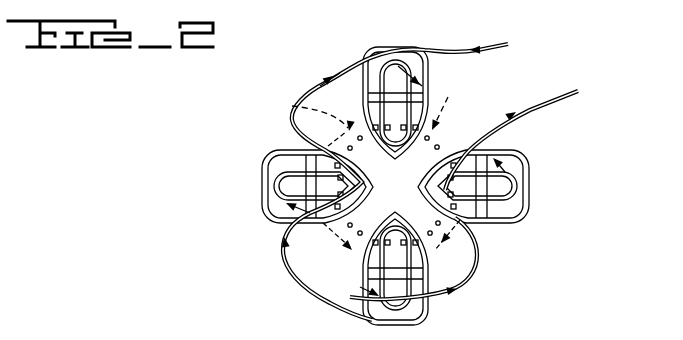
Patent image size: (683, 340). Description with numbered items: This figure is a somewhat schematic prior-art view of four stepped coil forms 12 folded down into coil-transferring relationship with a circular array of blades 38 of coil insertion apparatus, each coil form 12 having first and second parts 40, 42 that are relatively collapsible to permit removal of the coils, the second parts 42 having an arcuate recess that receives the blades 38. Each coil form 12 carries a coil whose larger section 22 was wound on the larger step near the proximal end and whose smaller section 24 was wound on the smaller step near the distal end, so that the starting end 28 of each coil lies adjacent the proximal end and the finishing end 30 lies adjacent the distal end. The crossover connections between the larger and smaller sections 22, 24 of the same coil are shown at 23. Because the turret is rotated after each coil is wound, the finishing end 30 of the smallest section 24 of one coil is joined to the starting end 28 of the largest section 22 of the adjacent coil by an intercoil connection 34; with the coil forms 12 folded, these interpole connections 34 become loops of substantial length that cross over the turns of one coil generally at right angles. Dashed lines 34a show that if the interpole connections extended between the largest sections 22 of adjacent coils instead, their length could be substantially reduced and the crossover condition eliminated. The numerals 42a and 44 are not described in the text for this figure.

The coil form 12 is at (498, 151).
The larger section 22 is at (430, 62).
The crossover connection 23 is at (500, 163).
The smaller section 24 is at (323, 81).
The starting end 28 is at (458, 45).
The finishing end 30 is at (375, 62).
The intercoil connection 34 is at (333, 72).
The dashed lines 34a is at (351, 171).
The blades 38 is at (449, 103).
The first part 40 is at (517, 197).
The second part 42 is at (466, 216).
The cross bars 42a is at (347, 65).
The central fasteners 44 is at (420, 190).